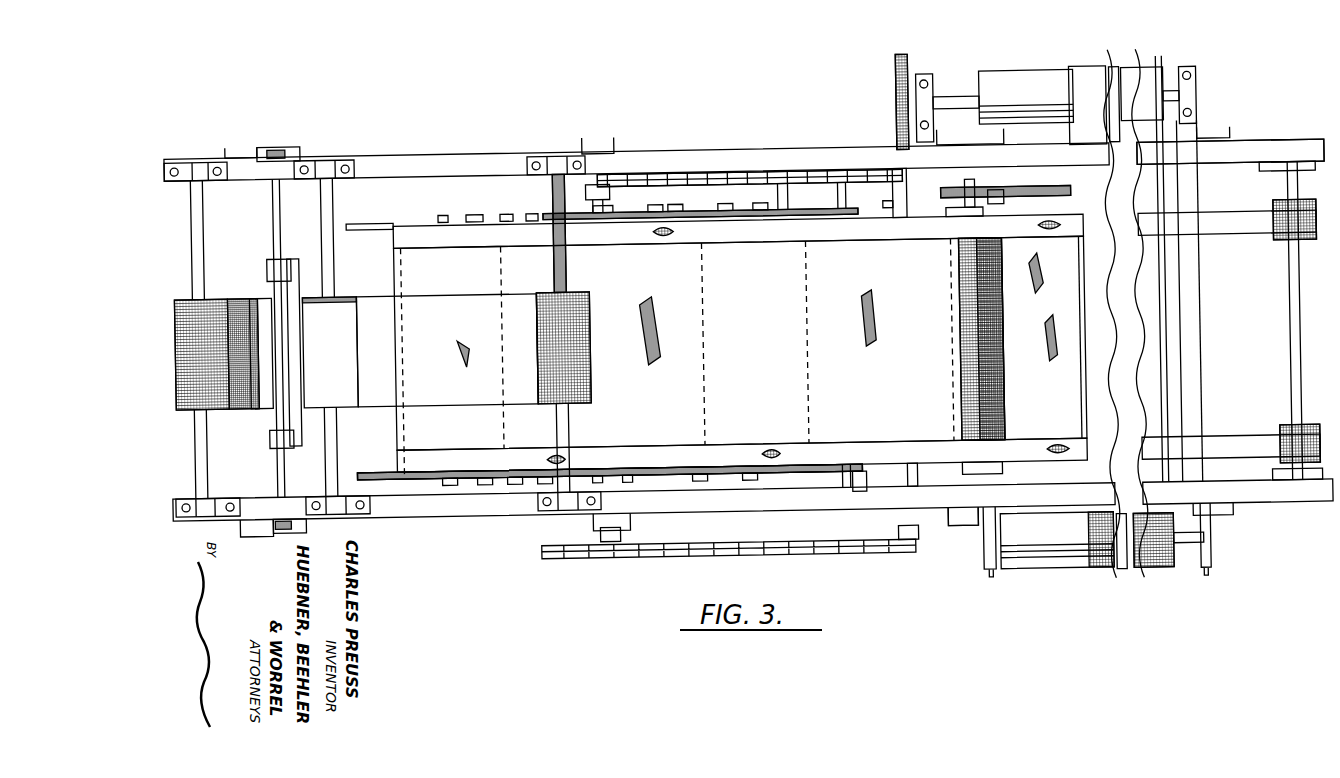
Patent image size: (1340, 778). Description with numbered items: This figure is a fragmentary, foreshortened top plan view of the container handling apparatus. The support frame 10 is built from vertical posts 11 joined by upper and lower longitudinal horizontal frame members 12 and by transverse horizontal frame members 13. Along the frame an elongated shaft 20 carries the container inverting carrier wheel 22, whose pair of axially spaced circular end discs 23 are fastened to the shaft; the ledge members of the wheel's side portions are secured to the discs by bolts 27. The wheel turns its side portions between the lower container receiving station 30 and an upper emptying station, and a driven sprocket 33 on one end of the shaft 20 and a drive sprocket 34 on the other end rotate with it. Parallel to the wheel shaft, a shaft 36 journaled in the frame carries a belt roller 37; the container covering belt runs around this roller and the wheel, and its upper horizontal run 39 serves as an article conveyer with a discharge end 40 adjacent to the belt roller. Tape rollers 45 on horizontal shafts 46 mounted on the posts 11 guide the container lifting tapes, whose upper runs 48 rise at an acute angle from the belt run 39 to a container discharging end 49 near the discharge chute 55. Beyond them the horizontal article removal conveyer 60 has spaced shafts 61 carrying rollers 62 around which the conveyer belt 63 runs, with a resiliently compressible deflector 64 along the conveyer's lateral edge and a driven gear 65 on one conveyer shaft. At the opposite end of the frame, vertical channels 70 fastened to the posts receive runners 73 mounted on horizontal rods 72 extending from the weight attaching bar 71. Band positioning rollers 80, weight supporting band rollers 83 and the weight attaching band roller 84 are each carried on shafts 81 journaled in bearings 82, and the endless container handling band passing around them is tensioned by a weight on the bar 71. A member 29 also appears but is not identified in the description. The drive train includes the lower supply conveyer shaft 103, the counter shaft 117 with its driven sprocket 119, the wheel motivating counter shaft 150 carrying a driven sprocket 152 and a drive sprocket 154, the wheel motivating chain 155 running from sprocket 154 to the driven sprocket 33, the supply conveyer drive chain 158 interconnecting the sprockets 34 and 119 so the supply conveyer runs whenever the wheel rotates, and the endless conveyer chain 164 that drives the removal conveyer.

The support frame 10 is at (1261, 129).
The vertical posts 11 is at (238, 158).
The longitudinally extended horizontal frame members 12 is at (1285, 142).
The transversely extended horizontal frame members 13 is at (1200, 343).
The shaft 20 is at (600, 482).
The container inverting carrier wheel 22 is at (736, 202).
The circular end discs 23 is at (822, 242).
The bolts 27 is at (506, 214).
The side rail 29 is at (820, 466).
The container receiving station 30 is at (456, 296).
The driven sprocket 33 is at (612, 191).
The drive sprocket 34 is at (604, 543).
The shaft 36 is at (960, 208).
The belt roller 37 is at (972, 208).
The upper horizontal run 39 is at (794, 335).
The discharge end 40 is at (1003, 394).
The tape rollers 45 is at (1282, 242).
The shafts 46 is at (1290, 310).
The upper runs 48 is at (892, 240).
The container discharging end 49 is at (1292, 210).
The discharge chute 55 is at (1055, 337).
The article removal conveyer 60 is at (1174, 57).
The shafts 61 is at (945, 97).
The rollers 62 is at (1028, 72).
The conveyer belt 63 is at (1090, 68).
The deflector 64 is at (1166, 302).
The driven gear 65 is at (926, 74).
The channels 70 is at (282, 148).
The weight attaching bar 71 is at (298, 276).
The rods 72 is at (282, 226).
The runners 73 is at (279, 150).
The band positioning rollers 80 is at (572, 293).
The shafts 81 is at (336, 244).
The bearings 82 is at (188, 168).
The weight supporting band rollers 83 is at (212, 298).
The weight attaching band roller 84 is at (259, 298).
The lower shaft 103 is at (858, 490).
The counter shaft 117 is at (968, 527).
The driven sprocket 119 is at (902, 540).
The wheel motivating counter shaft 150 is at (980, 475).
The driven sprocket 152 is at (1006, 197).
The drive sprocket 154 is at (1000, 188).
The wheel motivating chain 155 is at (740, 176).
The supply conveyer drive chain 158 is at (775, 557).
The conveyer chain 164 is at (900, 66).